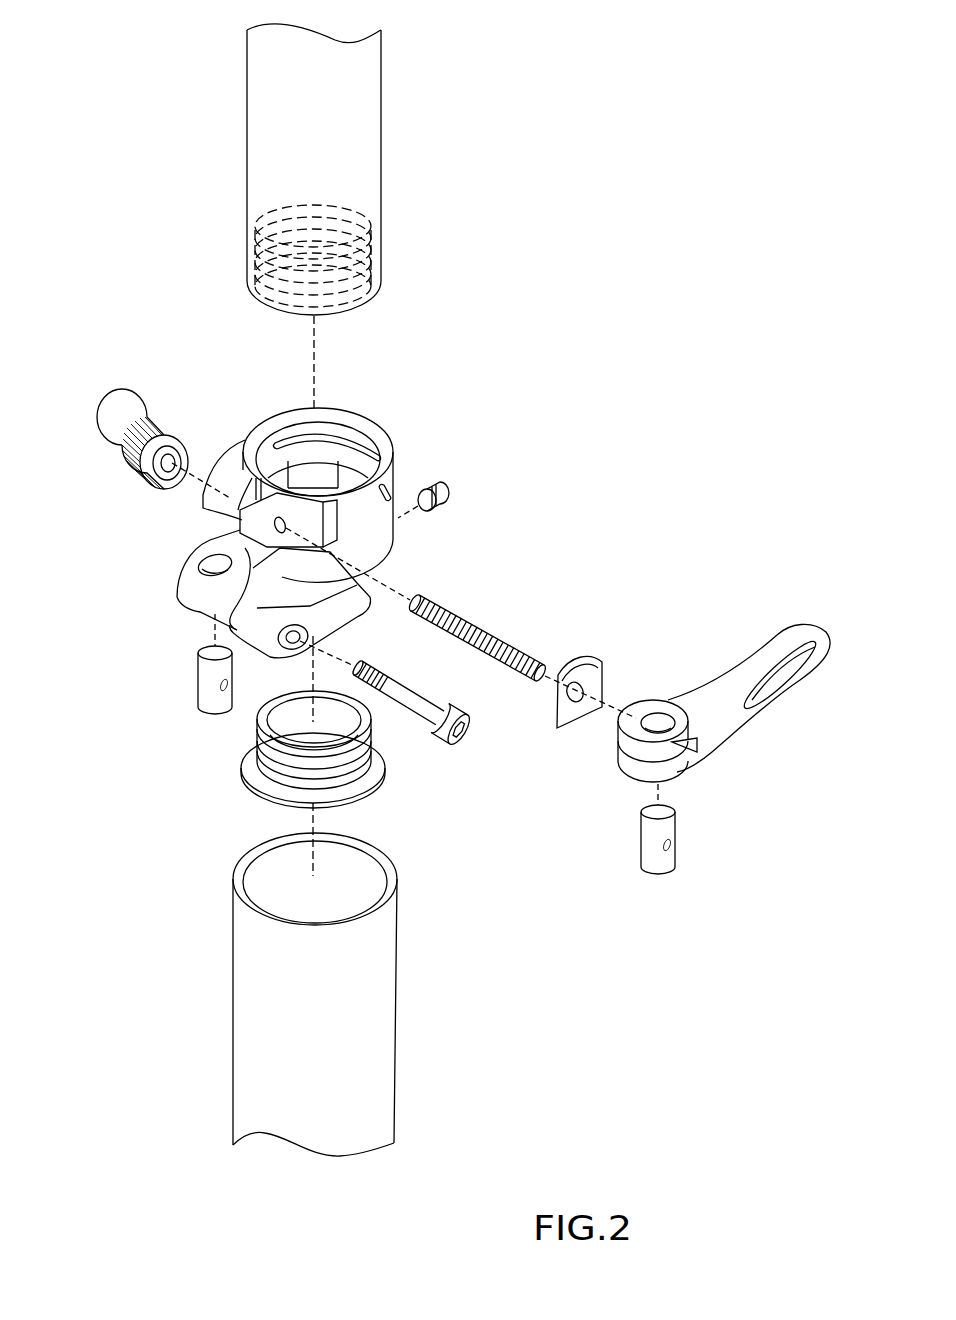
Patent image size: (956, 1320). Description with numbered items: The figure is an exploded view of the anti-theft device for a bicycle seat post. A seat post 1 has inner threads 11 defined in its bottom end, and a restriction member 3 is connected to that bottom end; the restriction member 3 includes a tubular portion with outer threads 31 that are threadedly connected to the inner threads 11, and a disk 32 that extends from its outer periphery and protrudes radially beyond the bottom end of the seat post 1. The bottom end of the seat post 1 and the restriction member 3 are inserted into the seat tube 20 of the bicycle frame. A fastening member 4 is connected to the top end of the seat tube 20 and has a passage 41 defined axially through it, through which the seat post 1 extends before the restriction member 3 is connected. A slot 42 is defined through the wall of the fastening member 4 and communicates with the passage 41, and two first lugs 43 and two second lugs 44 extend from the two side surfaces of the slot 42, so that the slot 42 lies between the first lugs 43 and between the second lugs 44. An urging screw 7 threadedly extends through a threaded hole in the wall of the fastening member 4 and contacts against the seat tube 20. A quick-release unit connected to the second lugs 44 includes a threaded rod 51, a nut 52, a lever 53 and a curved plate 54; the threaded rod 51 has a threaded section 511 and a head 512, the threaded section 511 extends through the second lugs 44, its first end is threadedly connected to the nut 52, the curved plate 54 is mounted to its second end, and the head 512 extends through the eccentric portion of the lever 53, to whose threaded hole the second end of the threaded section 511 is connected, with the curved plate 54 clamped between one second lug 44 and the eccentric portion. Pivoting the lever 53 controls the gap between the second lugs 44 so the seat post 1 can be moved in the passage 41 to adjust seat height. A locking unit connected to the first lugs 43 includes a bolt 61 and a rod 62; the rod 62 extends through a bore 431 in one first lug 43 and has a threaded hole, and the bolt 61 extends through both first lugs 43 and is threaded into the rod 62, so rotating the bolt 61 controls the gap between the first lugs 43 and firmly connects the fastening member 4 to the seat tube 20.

The seat post 1 is at (380, 123).
The inner threads 11 is at (348, 214).
The seat tube 20 is at (400, 1040).
The restriction member 3 is at (389, 796).
The outer threads 31 is at (263, 757).
The disk 32 is at (272, 789).
The fastening member 4 is at (406, 432).
The passage 41 is at (352, 420).
The slot 42 is at (252, 490).
The first lugs 43 is at (205, 593).
The bore 431 is at (205, 570).
The second lugs 44 is at (232, 493).
The urging screw 7 is at (440, 494).
The nut 52 is at (150, 438).
The threaded rod 51 is at (560, 833).
The threaded section 511 is at (520, 684).
The head 512 is at (640, 827).
The lever 53 is at (750, 716).
The curved plate 54 is at (595, 670).
The bolt 61 is at (427, 719).
The rod 62 is at (205, 682).